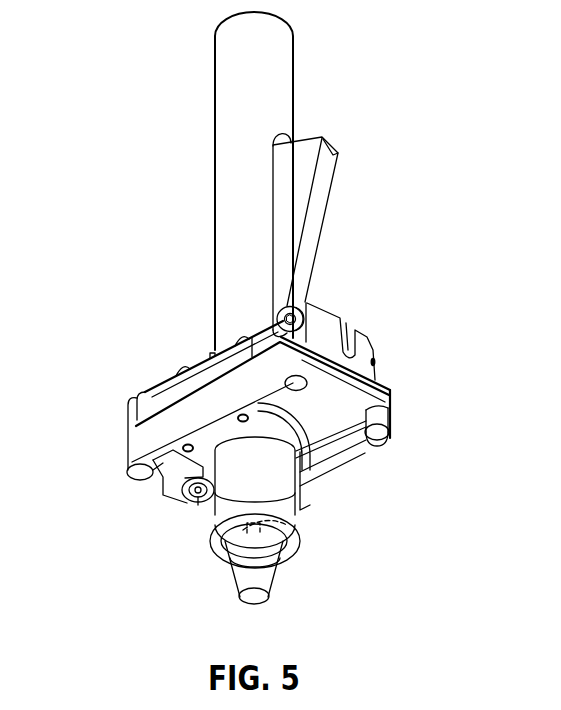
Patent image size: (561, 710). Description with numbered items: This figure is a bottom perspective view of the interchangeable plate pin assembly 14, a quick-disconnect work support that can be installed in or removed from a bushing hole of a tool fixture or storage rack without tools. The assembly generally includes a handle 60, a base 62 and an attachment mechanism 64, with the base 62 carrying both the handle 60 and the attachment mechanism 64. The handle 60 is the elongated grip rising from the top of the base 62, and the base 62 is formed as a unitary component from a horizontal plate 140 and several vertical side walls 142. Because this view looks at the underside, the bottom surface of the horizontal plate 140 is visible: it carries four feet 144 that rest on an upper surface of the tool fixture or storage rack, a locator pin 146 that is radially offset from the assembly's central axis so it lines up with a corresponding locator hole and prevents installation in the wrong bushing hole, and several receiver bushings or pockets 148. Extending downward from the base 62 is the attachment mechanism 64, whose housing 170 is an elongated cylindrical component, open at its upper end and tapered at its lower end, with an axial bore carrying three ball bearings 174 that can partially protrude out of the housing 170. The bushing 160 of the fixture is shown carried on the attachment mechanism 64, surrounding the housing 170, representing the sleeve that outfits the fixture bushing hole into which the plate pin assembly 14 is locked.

The plate pin assembly 14 is at (462, 122).
The handle 60 is at (331, 74).
The base 62 is at (399, 320).
The attachment mechanism 64 is at (174, 590).
The horizontal plate 140 is at (148, 437).
The vertical side walls 142 is at (128, 408).
The feet 144 is at (133, 468).
The locator pin 146 is at (198, 500).
The receiver bushings or pockets 148 is at (342, 418).
The bushing 160 is at (297, 518).
The housing 170 is at (281, 596).
The ball bearings 174 is at (300, 538).